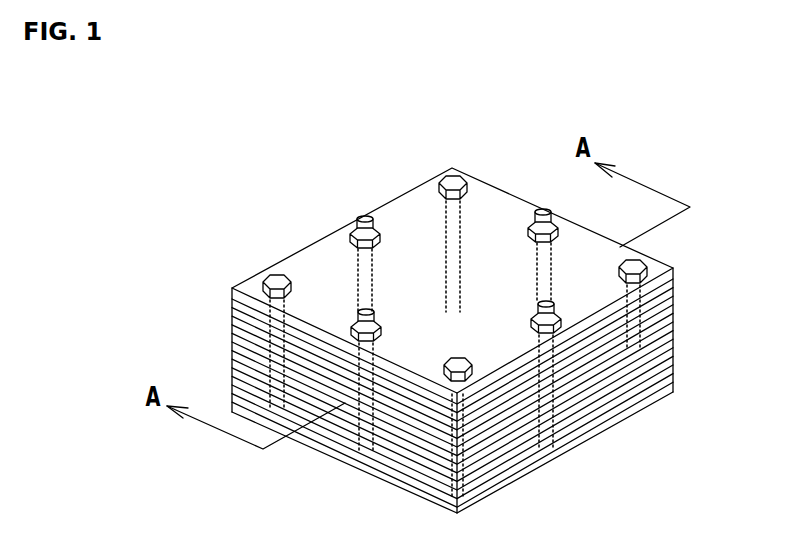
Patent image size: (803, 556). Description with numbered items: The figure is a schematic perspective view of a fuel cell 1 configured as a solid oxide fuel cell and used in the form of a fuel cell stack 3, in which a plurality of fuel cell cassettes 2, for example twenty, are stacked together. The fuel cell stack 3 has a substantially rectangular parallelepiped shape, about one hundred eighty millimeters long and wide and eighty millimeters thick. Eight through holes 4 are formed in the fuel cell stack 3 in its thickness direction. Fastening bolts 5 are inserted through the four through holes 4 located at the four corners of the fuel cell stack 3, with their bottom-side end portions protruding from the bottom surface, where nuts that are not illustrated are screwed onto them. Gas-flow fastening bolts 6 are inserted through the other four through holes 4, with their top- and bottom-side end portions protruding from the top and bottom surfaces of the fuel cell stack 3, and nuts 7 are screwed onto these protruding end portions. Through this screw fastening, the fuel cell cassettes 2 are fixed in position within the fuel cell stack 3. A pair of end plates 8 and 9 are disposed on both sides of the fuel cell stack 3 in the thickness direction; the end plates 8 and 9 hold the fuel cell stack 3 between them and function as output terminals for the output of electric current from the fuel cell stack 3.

The fuel cell 1 is at (227, 184).
The fuel cell cassette 2 is at (672, 312).
The fuel cell stack 3 is at (617, 377).
The through hole 4 is at (360, 278).
The fastening bolt 5 is at (277, 277).
The gas-flow fastening bolt 6 is at (375, 257).
The nut 7 is at (352, 232).
The end plate 8 is at (672, 282).
The end plate 9 is at (672, 388).